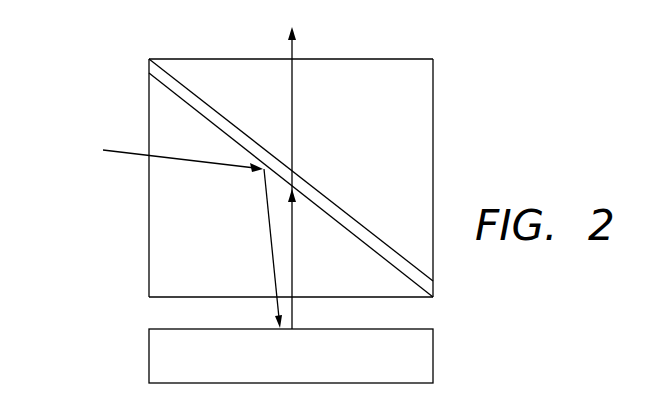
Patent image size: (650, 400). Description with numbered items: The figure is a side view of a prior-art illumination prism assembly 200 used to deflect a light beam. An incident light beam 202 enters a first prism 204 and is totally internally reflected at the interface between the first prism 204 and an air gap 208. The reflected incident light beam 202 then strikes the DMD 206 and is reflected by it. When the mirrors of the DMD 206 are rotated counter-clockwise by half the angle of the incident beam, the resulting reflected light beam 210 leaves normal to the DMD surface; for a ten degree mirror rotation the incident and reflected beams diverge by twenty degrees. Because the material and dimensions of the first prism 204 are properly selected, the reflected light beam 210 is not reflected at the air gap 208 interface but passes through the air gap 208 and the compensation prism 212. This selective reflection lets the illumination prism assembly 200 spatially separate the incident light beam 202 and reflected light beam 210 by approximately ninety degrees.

The illumination prism assembly 200 is at (100, 98).
The incident light beam 202 is at (125, 157).
The first prism 204 is at (223, 254).
The DMD 206 is at (311, 367).
The air gap 208 is at (355, 222).
The reflected light beam 210 is at (297, 45).
The compensation prism 212 is at (398, 126).